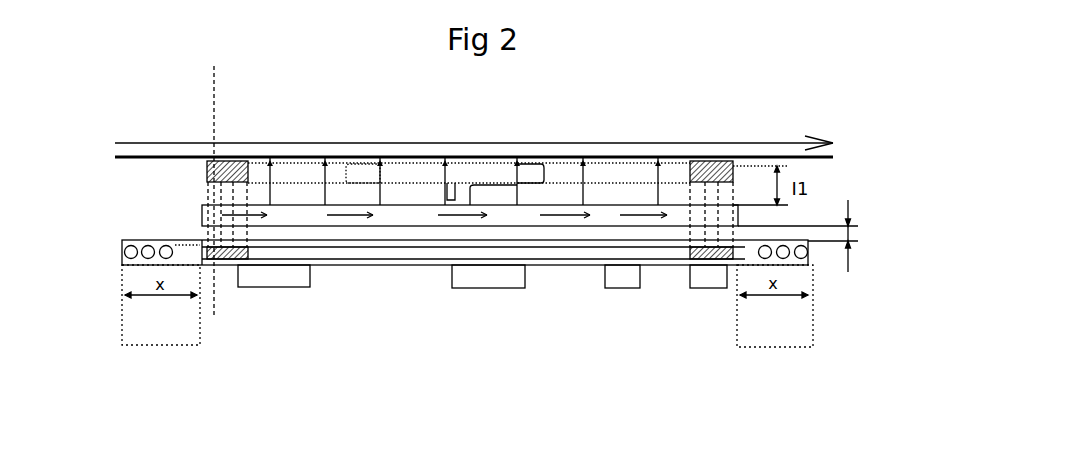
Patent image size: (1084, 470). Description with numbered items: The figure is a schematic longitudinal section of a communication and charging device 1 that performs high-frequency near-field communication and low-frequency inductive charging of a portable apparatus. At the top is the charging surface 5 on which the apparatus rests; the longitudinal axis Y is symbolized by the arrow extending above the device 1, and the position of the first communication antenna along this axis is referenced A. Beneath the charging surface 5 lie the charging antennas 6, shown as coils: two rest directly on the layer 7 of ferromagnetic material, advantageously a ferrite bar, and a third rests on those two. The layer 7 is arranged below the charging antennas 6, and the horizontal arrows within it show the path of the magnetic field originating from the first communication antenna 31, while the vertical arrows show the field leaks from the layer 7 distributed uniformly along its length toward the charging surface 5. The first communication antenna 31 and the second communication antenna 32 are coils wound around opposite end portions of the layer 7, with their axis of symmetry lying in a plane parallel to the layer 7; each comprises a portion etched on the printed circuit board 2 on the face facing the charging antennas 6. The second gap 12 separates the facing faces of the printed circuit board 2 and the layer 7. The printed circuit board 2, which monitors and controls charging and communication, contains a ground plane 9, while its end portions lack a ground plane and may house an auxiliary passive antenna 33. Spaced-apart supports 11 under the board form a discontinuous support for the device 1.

The communication and charging device 1 is at (366, 156).
The printed circuit board 2 is at (493, 274).
The charging surface 5 is at (168, 155).
The charging antenna 6 is at (407, 195).
The layer of ferromagnetic material 7 is at (567, 204).
The ground plane 9 is at (563, 248).
The supports 11 is at (275, 278).
The second gap 12 is at (815, 236).
The first communication antenna 31 is at (218, 158).
The second communication antenna 32 is at (700, 158).
The auxiliary passive antenna 33 is at (135, 240).
The position of the communication antenna A is at (215, 180).
The longitudinal axis Y is at (334, 142).